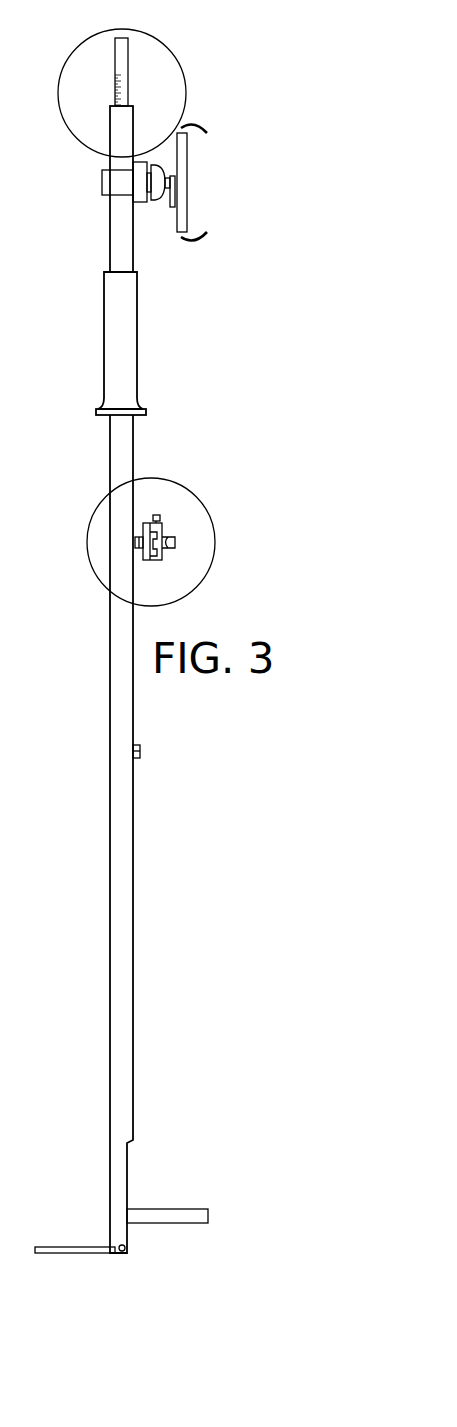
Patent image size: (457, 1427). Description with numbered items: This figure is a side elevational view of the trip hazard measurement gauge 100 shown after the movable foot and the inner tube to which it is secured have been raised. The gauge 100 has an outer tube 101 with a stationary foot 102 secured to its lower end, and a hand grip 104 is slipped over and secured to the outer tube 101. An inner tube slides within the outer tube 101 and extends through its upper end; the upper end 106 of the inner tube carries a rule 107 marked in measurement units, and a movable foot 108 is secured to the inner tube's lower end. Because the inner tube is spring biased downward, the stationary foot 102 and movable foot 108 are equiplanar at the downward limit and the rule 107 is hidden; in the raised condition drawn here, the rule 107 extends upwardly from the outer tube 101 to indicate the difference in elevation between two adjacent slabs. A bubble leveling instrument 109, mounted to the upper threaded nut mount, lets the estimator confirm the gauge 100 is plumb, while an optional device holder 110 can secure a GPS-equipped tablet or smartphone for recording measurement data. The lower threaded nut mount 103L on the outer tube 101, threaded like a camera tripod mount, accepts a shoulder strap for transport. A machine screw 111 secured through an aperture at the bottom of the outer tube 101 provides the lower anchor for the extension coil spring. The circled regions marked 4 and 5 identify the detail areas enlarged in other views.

The trip hazard measurement gauge 100 is at (84, 215).
The outer tube 101 is at (125, 840).
The stationary foot 102 is at (87, 1249).
The lower threaded nut mount 103L is at (140, 748).
The hand grip 104 is at (125, 339).
The upper end of the inner tube 106 is at (122, 52).
The rule 107 is at (106, 85).
The movable foot 108 is at (163, 1215).
The bubble leveling instrument 109 is at (175, 542).
The device holder 110 is at (180, 182).
The machine screw 111 is at (125, 1252).
The detail view FIG. 4 callout 4 is at (167, 42).
The detail view FIG. 5 callout 5 is at (196, 494).